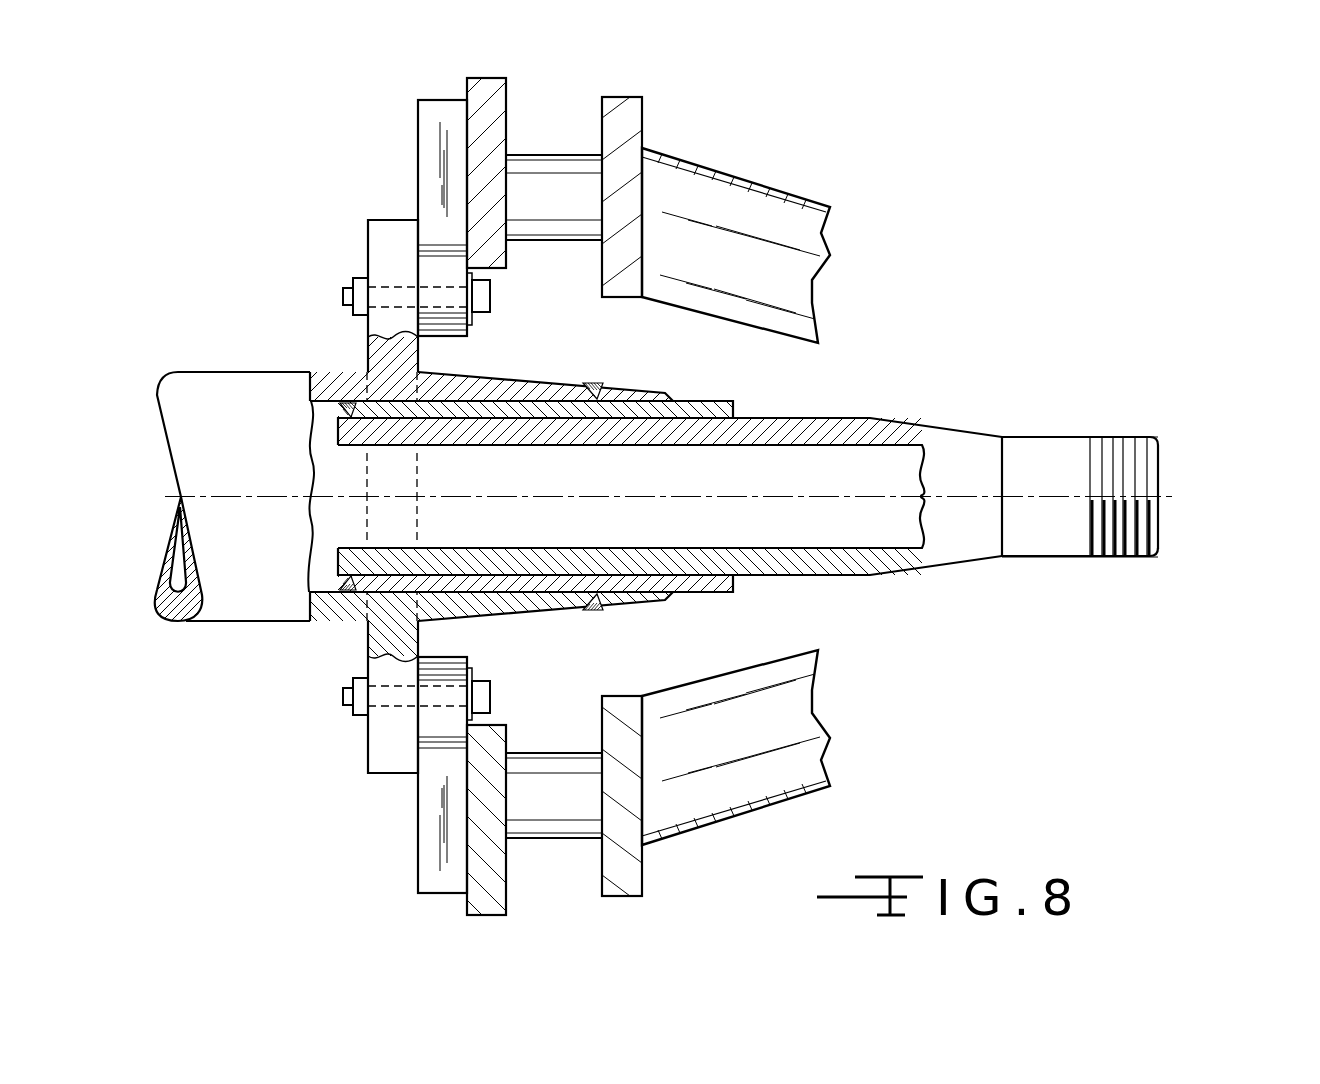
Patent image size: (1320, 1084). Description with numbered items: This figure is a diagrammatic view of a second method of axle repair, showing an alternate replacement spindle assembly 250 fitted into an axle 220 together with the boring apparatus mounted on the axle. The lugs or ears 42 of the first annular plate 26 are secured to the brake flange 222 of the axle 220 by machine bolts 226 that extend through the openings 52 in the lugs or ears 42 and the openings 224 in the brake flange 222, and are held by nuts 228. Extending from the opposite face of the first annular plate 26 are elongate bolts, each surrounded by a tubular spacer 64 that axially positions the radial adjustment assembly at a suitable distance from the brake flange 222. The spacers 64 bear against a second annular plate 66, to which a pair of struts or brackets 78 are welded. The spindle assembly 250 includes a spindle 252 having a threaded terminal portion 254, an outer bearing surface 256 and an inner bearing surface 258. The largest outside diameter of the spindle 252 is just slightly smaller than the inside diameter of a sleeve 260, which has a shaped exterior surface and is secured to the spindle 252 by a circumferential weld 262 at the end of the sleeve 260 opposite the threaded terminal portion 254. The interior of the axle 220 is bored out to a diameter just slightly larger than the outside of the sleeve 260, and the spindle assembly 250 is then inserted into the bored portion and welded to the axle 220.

The first annular plate 26 is at (485, 97).
The lugs or ears 42 is at (441, 108).
The openings 52 is at (440, 297).
The spacer 64 is at (542, 177).
The second annular plate 66 is at (620, 125).
The struts or brackets 78 is at (732, 203).
The axle 220 is at (203, 398).
The brake flange 222 is at (377, 232).
The openings 224 is at (385, 288).
The machine bolts 226 is at (490, 302).
The nuts 228 is at (355, 303).
The replacement spindle assembly 250 is at (1170, 517).
The spindle 252 is at (1162, 458).
The threaded terminal portion 254 is at (1118, 440).
The outer bearing surface 256 is at (1027, 436).
The inner bearing surface 258 is at (807, 418).
The sleeve 260 is at (630, 400).
The circumferential weld 262 is at (340, 587).